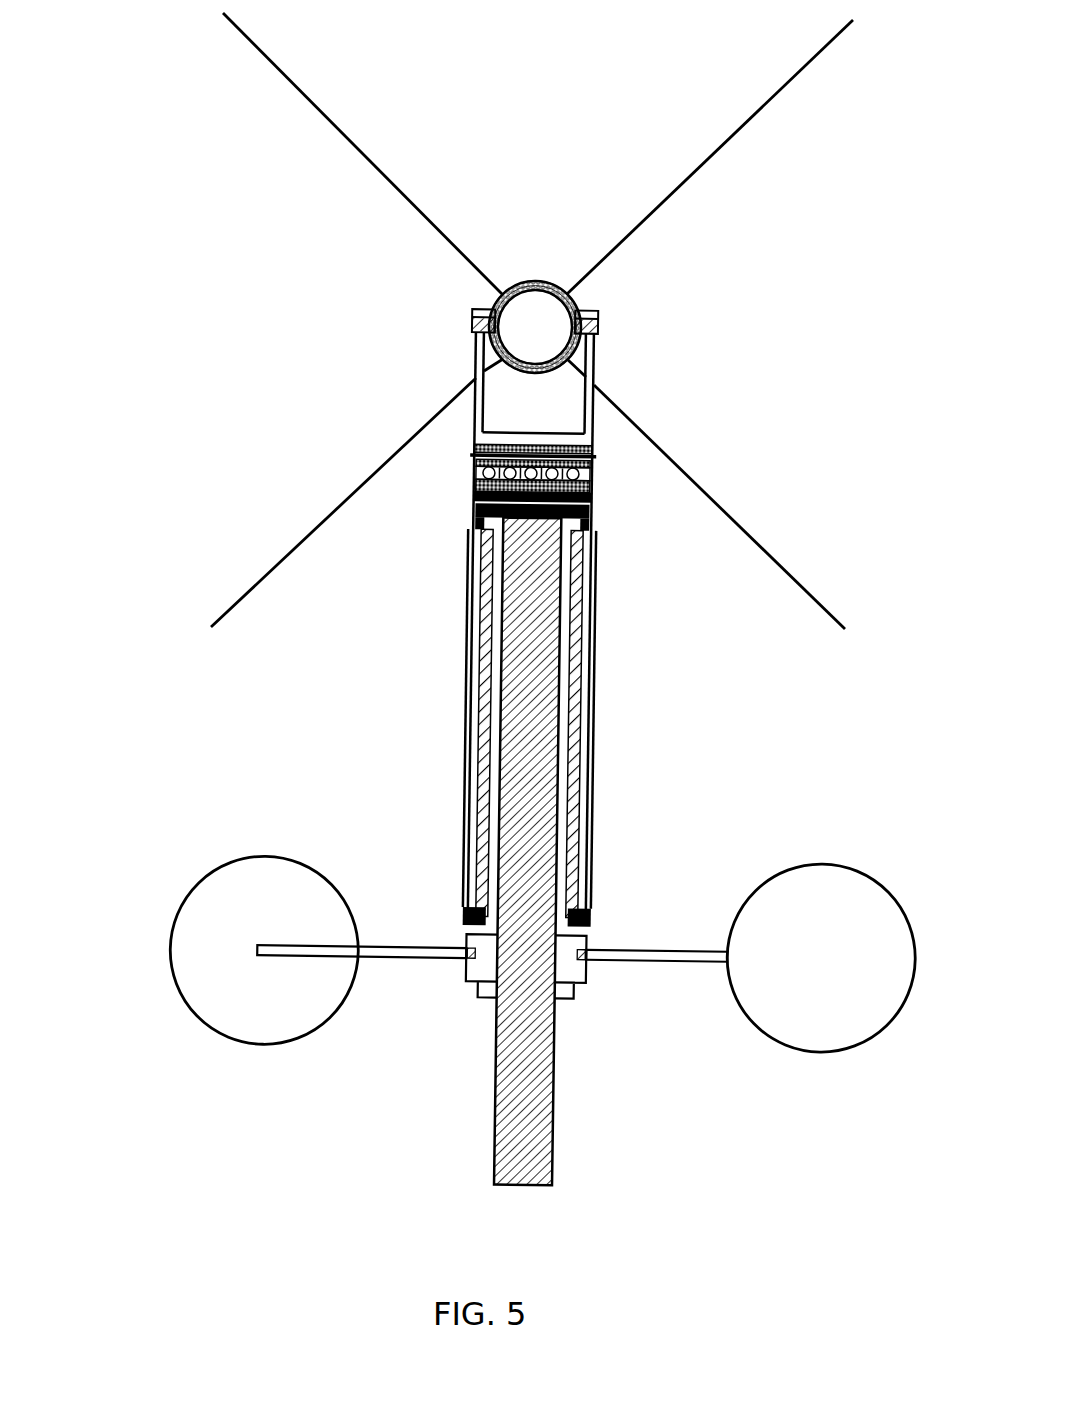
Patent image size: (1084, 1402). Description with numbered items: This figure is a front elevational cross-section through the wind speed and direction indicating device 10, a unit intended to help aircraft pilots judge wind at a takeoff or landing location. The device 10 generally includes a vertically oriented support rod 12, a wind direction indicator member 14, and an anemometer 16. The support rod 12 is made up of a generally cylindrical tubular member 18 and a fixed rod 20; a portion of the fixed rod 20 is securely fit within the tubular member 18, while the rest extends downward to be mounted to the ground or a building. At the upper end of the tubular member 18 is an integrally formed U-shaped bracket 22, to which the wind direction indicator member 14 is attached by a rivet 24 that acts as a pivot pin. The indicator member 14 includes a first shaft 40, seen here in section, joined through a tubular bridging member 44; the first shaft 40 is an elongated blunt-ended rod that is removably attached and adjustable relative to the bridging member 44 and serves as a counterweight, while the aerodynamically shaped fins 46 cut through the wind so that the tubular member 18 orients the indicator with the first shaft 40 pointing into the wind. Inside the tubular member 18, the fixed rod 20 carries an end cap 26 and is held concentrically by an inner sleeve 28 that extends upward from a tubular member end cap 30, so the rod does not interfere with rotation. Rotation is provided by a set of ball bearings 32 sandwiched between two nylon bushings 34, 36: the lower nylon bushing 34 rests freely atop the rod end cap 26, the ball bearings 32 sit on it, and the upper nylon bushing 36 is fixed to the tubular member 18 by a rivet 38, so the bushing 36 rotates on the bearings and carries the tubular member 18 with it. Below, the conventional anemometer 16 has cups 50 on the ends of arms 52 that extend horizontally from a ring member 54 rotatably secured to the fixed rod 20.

The wind speed and direction indicating device 10 is at (233, 732).
The support rod 12 is at (607, 817).
The wind direction indicator member 14 is at (560, 255).
The anemometer 16 is at (470, 1012).
The tubular member 18 is at (594, 625).
The fixed rod 20 is at (530, 1145).
The U-shaped bracket 22 is at (597, 358).
The rivet 24 is at (599, 324).
The end cap 26 is at (594, 505).
The inner sleeve 28 is at (577, 680).
The tubular member end cap 30 is at (590, 918).
The ball bearings 32 is at (479, 475).
The nylon bushing 34 is at (471, 498).
The nylon bushing 36 is at (476, 449).
The rivet 38 is at (596, 457).
The first shaft 40 is at (521, 318).
The bridging member 44 is at (496, 296).
The fins 46 is at (303, 90).
The cups 50 is at (230, 1020).
The arms 52 is at (445, 950).
The ring member 54 is at (465, 980).